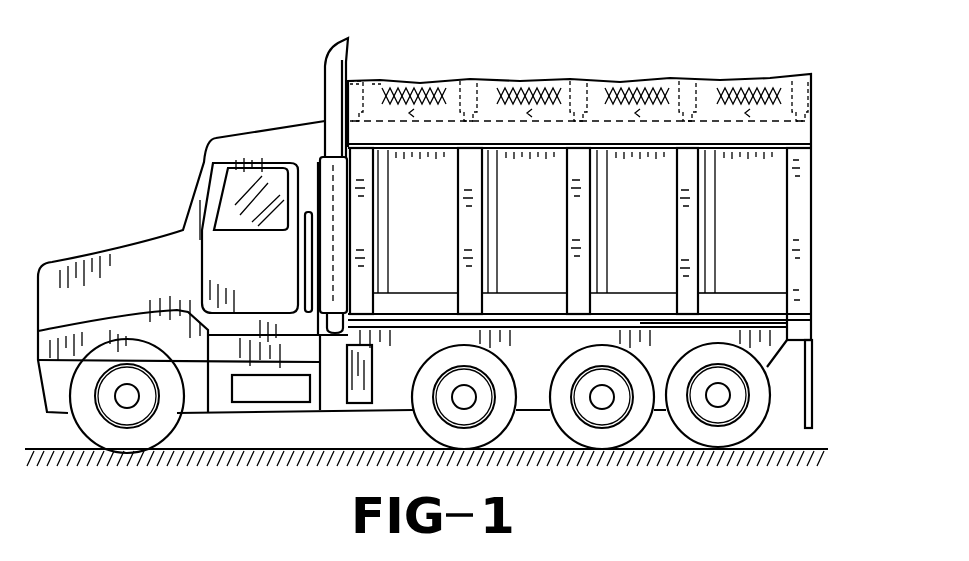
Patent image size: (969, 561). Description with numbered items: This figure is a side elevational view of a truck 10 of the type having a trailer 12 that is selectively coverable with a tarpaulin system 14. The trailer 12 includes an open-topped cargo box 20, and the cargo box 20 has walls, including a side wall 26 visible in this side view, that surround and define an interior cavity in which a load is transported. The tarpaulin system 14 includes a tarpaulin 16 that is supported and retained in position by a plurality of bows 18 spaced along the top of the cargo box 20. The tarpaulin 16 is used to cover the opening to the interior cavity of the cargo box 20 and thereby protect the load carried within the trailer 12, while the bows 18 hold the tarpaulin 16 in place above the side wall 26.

The truck 10 is at (158, 210).
The trailer 12 is at (825, 143).
The tarpaulin system 14 is at (404, 80).
The tarpaulin 16 is at (521, 85).
The bows 18 is at (352, 100).
The cargo box 20 is at (810, 206).
The side wall 26 is at (750, 246).